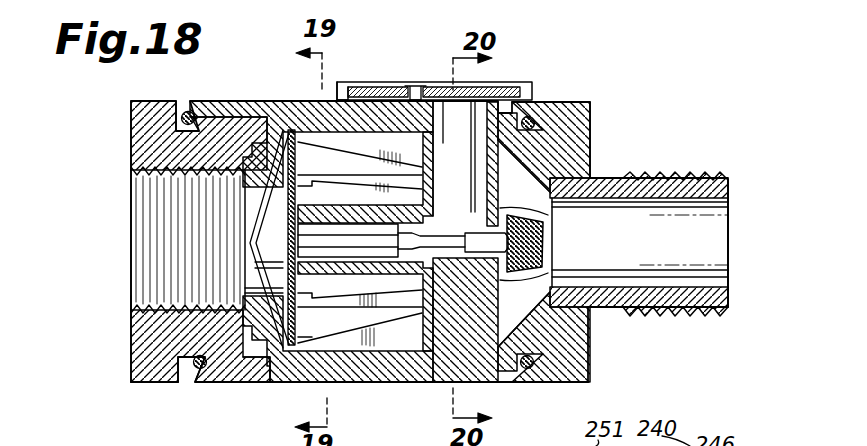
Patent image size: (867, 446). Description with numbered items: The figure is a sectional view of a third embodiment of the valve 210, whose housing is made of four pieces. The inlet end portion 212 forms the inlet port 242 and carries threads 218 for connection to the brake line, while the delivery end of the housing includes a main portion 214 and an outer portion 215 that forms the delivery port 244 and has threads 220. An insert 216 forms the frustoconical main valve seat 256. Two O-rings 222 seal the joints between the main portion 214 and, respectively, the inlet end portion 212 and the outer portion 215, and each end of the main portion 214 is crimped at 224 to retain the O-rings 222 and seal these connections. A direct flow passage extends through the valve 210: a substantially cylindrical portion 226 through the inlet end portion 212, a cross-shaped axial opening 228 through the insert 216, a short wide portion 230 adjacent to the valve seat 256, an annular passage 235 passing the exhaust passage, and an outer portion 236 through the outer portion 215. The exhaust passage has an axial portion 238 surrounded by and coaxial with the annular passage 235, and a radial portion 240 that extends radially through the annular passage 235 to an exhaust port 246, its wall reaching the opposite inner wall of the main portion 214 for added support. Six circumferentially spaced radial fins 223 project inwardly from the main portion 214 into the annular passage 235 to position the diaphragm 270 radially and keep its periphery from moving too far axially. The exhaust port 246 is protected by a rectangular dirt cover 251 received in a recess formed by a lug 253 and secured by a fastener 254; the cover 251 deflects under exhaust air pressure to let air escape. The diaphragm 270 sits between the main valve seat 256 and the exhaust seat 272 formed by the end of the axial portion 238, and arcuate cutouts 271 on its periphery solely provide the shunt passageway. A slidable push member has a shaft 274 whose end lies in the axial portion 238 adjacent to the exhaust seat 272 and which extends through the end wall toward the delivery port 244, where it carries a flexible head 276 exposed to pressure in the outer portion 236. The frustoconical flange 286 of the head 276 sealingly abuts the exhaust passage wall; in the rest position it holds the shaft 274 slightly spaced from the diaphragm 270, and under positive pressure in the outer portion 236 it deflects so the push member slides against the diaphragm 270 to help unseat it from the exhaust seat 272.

The valve 210 is at (635, 91).
The inlet end portion of the housing 212 is at (180, 82).
The main portion of the delivery end of the housing 214 is at (493, 381).
The outer portion of the delivery end of the housing 215 is at (572, 101).
The insert 216 is at (292, 120).
The threads 218 is at (128, 313).
The threads 220 is at (659, 318).
The O-rings 222 is at (533, 116).
The radial fins 223 is at (357, 161).
The crimp 224 is at (178, 385).
The substantially cylindrical portion of the flow passage 226 is at (255, 215).
The cross-shaped axial opening 228 is at (255, 250).
The short wide portion of the flow passage 230 is at (248, 384).
The annular passage 235 is at (367, 317).
The outer portion of the flow passage 236 is at (706, 250).
The axial portion of the exhaust passage 238 is at (415, 228).
The radial portion of the exhaust passage 240 is at (447, 100).
The inlet port 242 is at (128, 301).
The delivery port 244 is at (730, 284).
The exhaust port 246 is at (483, 100).
The dirt cover 251 is at (366, 88).
The lug 253 is at (340, 96).
The fastener 254 is at (414, 88).
The main valve seat 256 is at (250, 290).
The diaphragm 270 is at (299, 333).
The arcuate cutouts 271 is at (252, 232).
The exhaust seat 272 is at (265, 266).
The shaft portion of the push member 274 is at (448, 232).
The head of the push member 276 is at (553, 217).
The frustoconical flange 286 is at (525, 285).